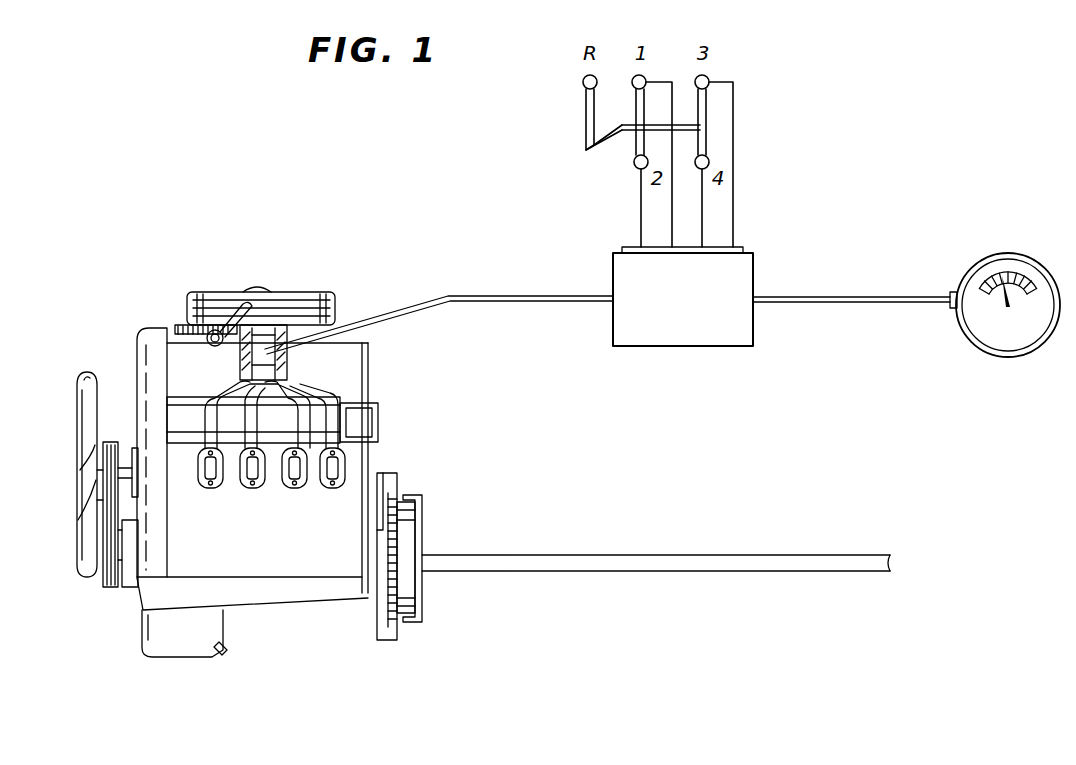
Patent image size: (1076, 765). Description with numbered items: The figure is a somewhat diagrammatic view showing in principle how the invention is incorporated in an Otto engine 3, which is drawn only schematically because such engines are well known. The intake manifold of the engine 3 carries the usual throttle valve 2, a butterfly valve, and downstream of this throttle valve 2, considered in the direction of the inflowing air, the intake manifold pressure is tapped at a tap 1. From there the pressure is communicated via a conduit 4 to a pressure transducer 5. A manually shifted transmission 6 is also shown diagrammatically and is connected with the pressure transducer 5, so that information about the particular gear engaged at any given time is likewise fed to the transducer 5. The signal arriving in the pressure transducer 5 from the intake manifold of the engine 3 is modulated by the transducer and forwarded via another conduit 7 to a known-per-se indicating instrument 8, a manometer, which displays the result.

The pressure tap 1 is at (290, 350).
The throttle valve 2 is at (268, 352).
The Otto engine 3 is at (378, 427).
The conduit 4 is at (560, 303).
The pressure transducer 5 is at (697, 348).
The manually shifted transmission 6 is at (588, 152).
The conduit 7 is at (915, 302).
The indicating instrument 8 is at (1045, 347).